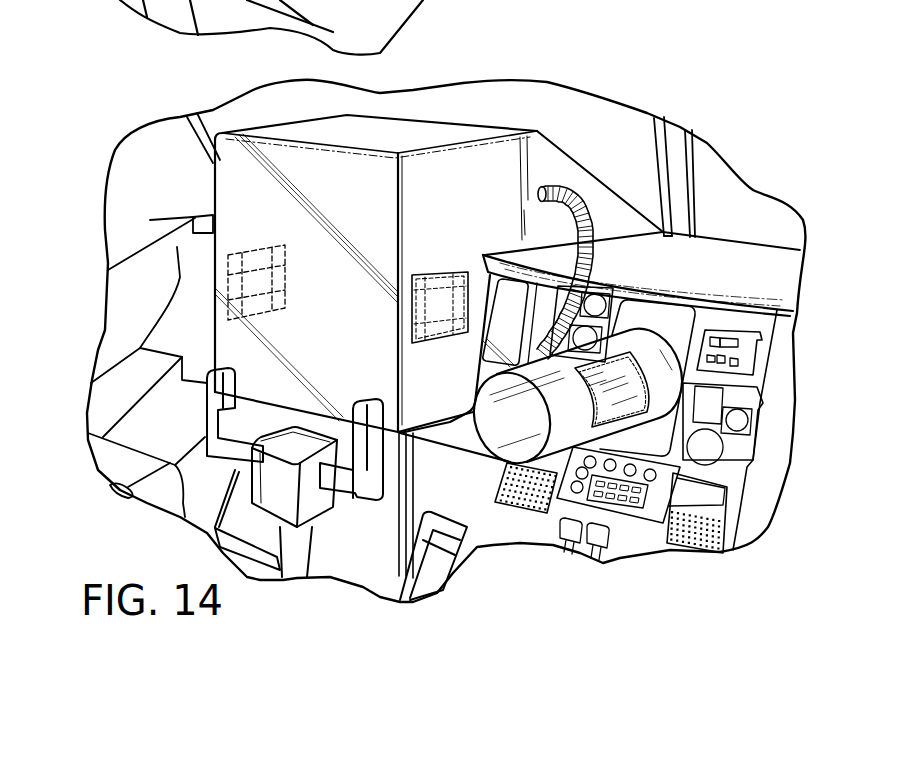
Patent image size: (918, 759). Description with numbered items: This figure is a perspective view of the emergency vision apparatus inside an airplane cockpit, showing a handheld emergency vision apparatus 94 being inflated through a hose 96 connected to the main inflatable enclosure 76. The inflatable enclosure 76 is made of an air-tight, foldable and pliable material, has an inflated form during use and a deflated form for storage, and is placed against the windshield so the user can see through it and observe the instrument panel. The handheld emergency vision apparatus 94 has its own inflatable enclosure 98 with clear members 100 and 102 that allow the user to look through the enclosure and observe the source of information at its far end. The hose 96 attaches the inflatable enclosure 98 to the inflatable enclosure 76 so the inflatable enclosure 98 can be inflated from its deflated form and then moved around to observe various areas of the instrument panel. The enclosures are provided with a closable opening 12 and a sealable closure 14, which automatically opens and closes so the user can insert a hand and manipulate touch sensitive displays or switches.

The inflatable enclosure 76 is at (459, 117).
The sealable closure 14 is at (243, 249).
The hose 96 is at (587, 203).
The closable opening 12 is at (604, 365).
The clear member 100 is at (538, 408).
The clear member 102 is at (665, 383).
The inflatable enclosure 98 is at (465, 431).
The handheld emergency vision apparatus 94 is at (494, 463).